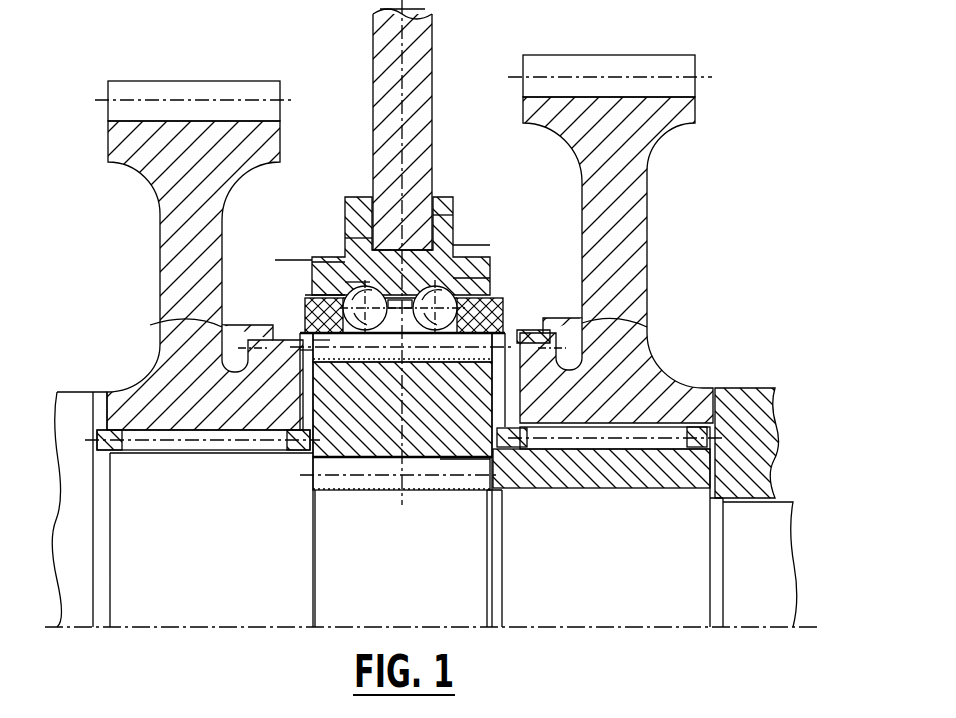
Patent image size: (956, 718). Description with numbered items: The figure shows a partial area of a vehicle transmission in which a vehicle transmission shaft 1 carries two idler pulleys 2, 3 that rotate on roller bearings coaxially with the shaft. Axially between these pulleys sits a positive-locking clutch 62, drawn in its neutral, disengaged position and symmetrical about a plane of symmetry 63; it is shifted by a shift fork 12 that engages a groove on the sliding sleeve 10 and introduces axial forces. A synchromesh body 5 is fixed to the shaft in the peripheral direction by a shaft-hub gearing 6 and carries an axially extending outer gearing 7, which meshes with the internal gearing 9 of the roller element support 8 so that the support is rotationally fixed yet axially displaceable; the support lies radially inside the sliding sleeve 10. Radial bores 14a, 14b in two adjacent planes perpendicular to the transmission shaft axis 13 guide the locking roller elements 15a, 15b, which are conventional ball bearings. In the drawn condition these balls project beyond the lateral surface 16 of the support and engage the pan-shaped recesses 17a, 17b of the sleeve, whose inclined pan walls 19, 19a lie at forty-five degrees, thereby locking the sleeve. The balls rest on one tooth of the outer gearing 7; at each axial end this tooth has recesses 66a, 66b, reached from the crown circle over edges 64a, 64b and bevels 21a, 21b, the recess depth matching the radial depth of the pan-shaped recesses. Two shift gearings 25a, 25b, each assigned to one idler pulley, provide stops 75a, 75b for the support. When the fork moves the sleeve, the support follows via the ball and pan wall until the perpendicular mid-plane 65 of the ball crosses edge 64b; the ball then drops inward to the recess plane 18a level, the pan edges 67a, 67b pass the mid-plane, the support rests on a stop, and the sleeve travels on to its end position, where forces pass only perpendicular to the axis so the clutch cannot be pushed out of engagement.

The vehicle transmission shaft 1 is at (484, 597).
The idler pulley 2 is at (162, 187).
The idler pulley 3 is at (637, 202).
The synchromesh body 5 is at (318, 488).
The shaft-hub gearing 6 is at (478, 497).
The outer gearing 7 is at (303, 472).
The roller element support 8 is at (469, 294).
The internal gearing 9 is at (493, 331).
The sliding sleeve 10 is at (350, 262).
The shift fork 12 is at (424, 48).
The transmission shaft axis 13 is at (57, 629).
The bore 14a is at (318, 293).
The bore 14b is at (380, 452).
The locking roller element 15a is at (355, 282).
The locking roller element 15b is at (397, 336).
The lateral surface 16 is at (458, 278).
The pan-shaped recess 17a is at (323, 262).
The pan-shaped recess 17b is at (456, 245).
The recess plane 18a is at (303, 350).
The pan wall 19 is at (418, 210).
The pan wall 19a is at (366, 238).
The bevel 21a is at (280, 260).
The bevel 21b is at (464, 460).
The shift gearing 25a is at (260, 327).
The shift gearing 25b is at (585, 290).
The positive-locking clutch 62 is at (502, 115).
The plane of symmetry 63 is at (392, 3).
The edge 64a is at (343, 340).
The edge 64b is at (535, 370).
The perpendicular mid-plane 65 is at (446, 215).
The recess 66a is at (307, 337).
The recess 66b is at (500, 305).
The pan edge 67a is at (330, 340).
The pan edge 67b is at (370, 447).
The stop 75a is at (152, 324).
The stop 75b is at (644, 320).